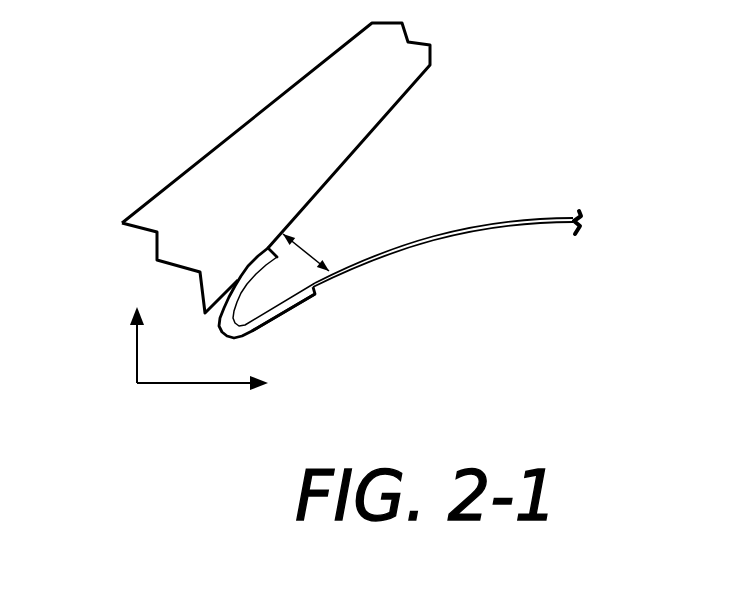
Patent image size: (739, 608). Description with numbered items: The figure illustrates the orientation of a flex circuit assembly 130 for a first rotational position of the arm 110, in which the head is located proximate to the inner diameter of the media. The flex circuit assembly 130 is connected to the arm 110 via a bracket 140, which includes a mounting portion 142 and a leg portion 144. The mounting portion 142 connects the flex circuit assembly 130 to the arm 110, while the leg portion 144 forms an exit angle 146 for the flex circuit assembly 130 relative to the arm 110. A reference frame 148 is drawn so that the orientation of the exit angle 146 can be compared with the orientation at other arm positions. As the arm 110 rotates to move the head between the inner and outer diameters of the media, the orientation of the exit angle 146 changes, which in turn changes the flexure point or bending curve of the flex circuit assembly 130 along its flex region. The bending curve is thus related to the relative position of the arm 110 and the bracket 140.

The arm 110 is at (332, 139).
The flex circuit assembly 130 is at (491, 222).
The bracket 140 is at (232, 258).
The mounting portion 142 is at (268, 248).
The leg portion 144 is at (300, 304).
The exit angle 146 is at (313, 258).
The reference frame 148 is at (137, 370).